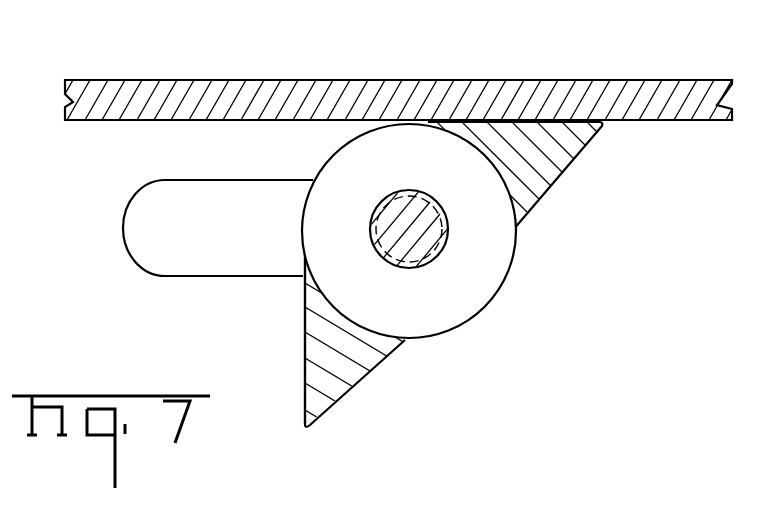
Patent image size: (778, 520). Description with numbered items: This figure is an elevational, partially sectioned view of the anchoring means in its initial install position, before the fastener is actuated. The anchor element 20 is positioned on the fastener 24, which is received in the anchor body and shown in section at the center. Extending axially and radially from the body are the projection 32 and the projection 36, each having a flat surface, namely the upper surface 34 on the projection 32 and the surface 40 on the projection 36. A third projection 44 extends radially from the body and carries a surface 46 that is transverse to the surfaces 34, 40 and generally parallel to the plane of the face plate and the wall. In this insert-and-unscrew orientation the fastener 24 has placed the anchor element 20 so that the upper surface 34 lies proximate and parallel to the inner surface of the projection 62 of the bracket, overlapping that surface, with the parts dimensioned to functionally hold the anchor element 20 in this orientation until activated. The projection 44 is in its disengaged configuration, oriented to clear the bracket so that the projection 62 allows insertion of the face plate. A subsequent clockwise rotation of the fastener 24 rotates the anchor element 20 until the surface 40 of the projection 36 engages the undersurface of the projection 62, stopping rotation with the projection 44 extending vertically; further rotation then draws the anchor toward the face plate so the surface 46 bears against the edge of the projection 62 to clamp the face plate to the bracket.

The projection 62 is at (235, 87).
The flat surface 34 is at (525, 120).
The projection 32 is at (540, 172).
The fastener 24 is at (438, 245).
The anchor element 20 is at (485, 312).
The third projection 44 is at (125, 220).
The surface 46 is at (223, 243).
The flat surface 40 is at (303, 336).
The projection 36 is at (352, 367).